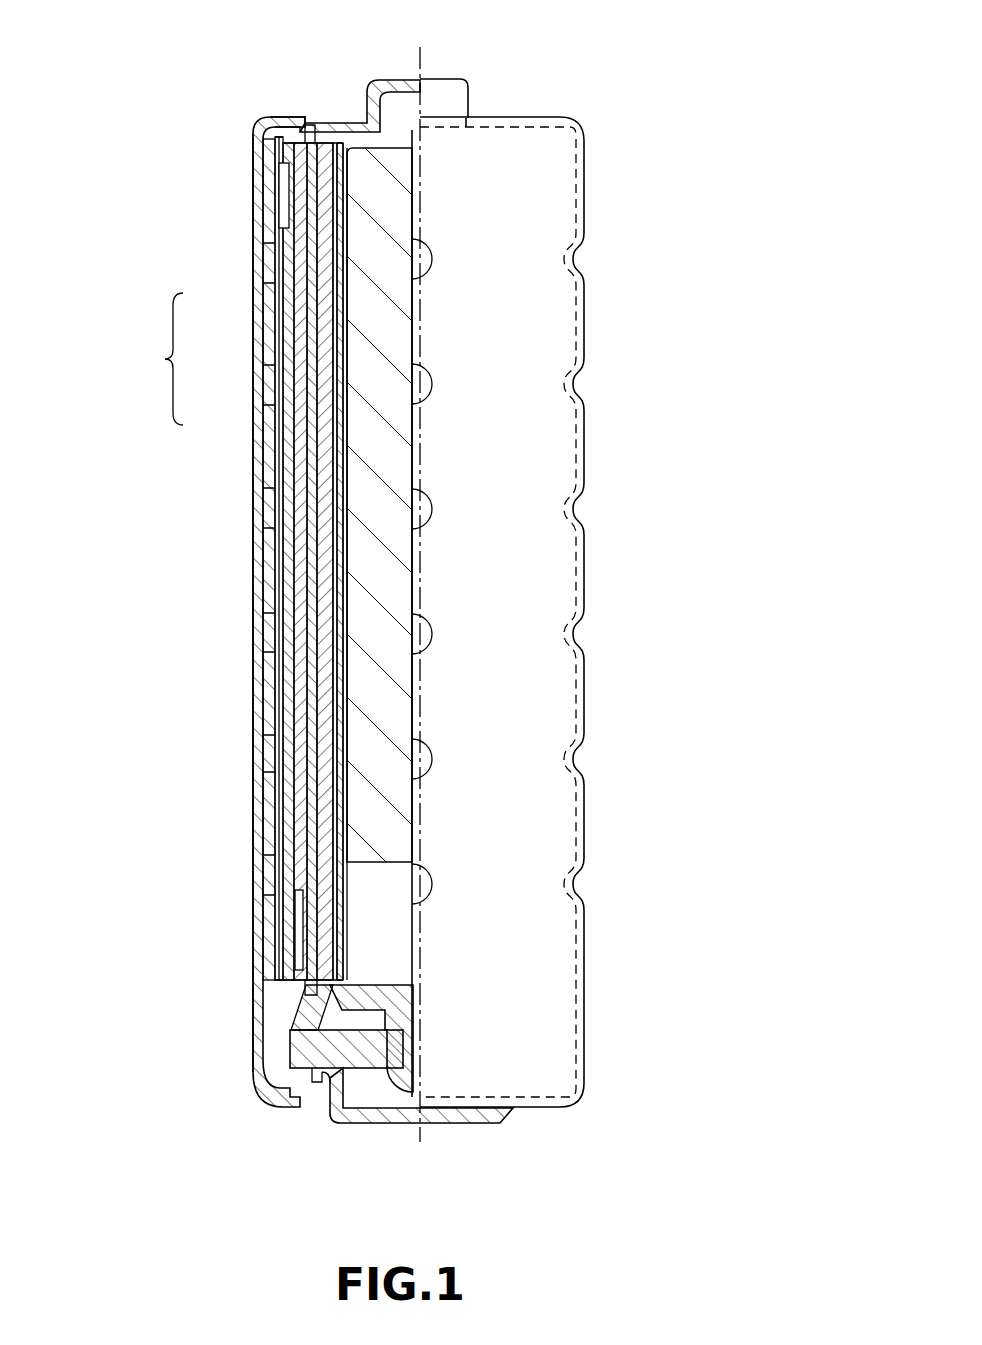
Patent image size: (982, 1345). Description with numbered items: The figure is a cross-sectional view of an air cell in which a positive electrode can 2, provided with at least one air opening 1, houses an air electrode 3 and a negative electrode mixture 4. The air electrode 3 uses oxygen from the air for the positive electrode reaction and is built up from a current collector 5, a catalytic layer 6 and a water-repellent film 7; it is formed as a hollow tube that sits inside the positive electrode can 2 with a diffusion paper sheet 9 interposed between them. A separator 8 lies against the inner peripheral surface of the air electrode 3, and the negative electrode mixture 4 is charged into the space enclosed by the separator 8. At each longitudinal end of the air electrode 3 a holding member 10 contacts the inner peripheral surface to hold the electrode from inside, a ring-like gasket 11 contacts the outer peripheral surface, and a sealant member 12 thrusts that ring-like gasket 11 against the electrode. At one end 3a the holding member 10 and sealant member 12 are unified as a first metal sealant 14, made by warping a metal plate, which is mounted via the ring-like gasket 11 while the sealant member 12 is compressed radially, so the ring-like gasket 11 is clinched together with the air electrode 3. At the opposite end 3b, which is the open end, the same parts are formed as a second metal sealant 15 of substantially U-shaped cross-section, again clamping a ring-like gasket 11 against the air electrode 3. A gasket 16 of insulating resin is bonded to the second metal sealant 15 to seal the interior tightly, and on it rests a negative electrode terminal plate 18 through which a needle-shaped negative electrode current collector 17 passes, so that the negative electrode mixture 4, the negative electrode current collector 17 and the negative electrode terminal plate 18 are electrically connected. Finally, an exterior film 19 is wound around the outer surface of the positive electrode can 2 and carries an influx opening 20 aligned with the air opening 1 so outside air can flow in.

The air opening 1 is at (265, 243).
The positive electrode can 2 is at (270, 908).
The air electrode 3 is at (236, 561).
The one end of the air electrode 3a is at (310, 120).
The opposite end of the air electrode 3b is at (310, 982).
The negative electrode mixture 4 is at (375, 547).
The current collector 5 is at (325, 312).
The catalytic layer 6 is at (312, 358).
The water-repellent film 7 is at (297, 408).
The separator 8 is at (337, 463).
The diffusion paper sheet 9 is at (285, 642).
The holding member 10 is at (333, 127).
The ring-like gasket 11 is at (287, 117).
The sealant member 12 is at (300, 200).
The first metal sealant 14 is at (400, 130).
The second metal sealant 15 is at (313, 985).
The gasket 16 is at (287, 1055).
The negative electrode current collector 17 is at (415, 690).
The negative electrode terminal plate 18 is at (380, 1124).
The exterior film 19 is at (264, 140).
The influx opening 20 is at (257, 772).